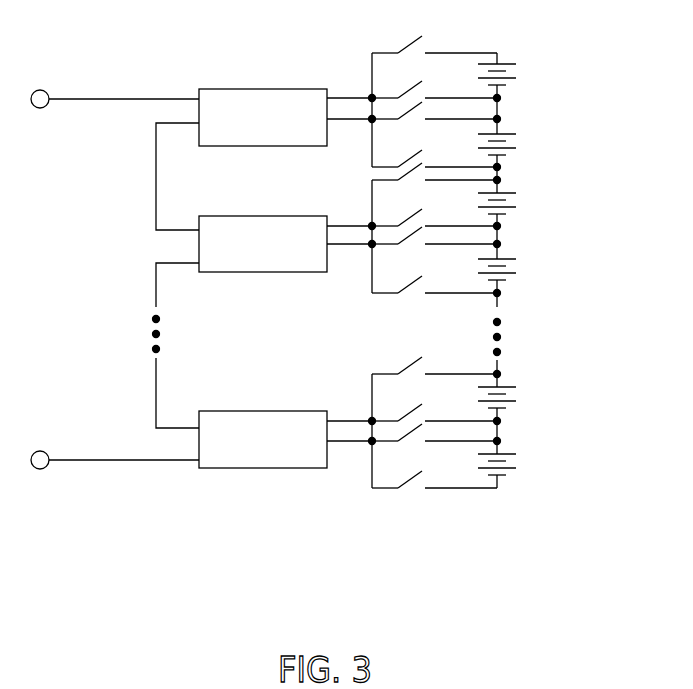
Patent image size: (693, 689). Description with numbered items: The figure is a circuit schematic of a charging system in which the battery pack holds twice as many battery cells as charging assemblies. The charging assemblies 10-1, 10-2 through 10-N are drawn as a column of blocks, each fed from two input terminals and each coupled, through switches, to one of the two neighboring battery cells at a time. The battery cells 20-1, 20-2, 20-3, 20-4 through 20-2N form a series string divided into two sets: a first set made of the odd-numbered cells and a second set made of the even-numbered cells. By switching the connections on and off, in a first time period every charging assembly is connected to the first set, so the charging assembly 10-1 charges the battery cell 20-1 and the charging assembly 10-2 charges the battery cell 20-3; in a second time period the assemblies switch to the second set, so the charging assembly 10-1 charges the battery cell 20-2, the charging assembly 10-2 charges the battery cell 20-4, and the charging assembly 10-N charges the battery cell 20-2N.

The charging assembly 10-1 is at (263, 117).
The charging assembly 10-2 is at (263, 244).
The charging assembly 10-N is at (263, 439).
The battery cell 20-1 is at (510, 78).
The battery cell 20-2 is at (510, 148).
The battery cell 20-3 is at (508, 207).
The battery cell 20-4 is at (508, 273).
The battery cell 20-2N is at (510, 468).